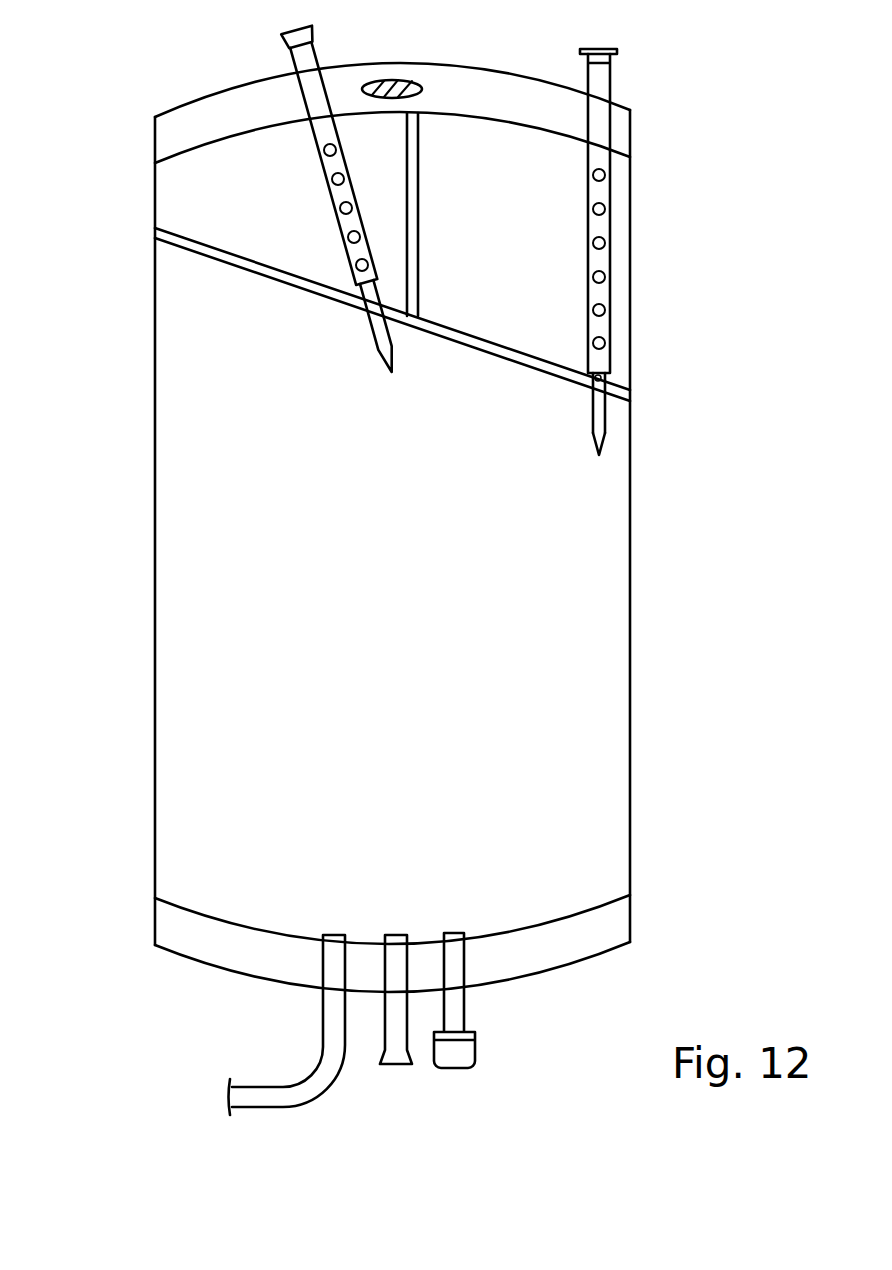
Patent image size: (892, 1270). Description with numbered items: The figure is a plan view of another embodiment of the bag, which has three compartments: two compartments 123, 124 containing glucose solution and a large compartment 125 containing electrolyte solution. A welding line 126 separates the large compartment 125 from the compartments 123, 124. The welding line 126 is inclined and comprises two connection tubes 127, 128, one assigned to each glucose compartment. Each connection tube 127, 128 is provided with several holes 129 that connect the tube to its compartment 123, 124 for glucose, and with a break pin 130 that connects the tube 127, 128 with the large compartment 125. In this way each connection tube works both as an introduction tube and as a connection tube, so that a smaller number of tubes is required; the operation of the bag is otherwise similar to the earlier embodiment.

The compartment 123 is at (176, 191).
The compartment 124 is at (630, 270).
The large compartment 125 is at (155, 469).
The welding line 126 is at (192, 256).
The connection tube 127 is at (288, 57).
The connection tube 128 is at (608, 420).
The holes 129 is at (606, 203).
The break pin 130 is at (605, 448).